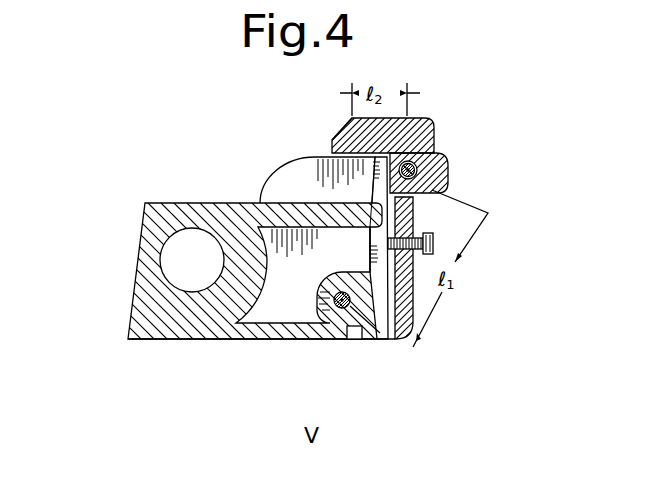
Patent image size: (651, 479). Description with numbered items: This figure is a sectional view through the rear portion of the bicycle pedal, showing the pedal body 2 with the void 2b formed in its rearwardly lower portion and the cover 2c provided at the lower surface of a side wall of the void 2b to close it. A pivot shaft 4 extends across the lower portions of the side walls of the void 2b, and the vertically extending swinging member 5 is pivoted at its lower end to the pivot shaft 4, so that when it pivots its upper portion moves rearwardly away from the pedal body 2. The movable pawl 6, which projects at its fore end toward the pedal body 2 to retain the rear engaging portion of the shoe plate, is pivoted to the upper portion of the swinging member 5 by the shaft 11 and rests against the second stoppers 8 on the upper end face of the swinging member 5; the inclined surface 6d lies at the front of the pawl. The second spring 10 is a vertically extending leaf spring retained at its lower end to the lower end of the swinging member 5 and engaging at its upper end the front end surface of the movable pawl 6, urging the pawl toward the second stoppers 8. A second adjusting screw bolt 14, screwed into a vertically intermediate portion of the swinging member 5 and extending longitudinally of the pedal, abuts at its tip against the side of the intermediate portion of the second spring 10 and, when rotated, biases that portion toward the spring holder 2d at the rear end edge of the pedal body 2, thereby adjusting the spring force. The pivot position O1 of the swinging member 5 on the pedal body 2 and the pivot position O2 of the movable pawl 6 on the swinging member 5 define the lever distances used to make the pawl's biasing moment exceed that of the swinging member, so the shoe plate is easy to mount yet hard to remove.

The pedal body 2 is at (208, 204).
The void 2b is at (252, 340).
The cover 2c is at (281, 310).
The spring holder 2d is at (387, 217).
The pivot shaft 4 is at (338, 310).
The swinging member 5 is at (408, 308).
The movable pawl 6 is at (428, 117).
The inclined surface of block 6d is at (340, 143).
The second stoppers 8 is at (410, 162).
The second spring 10 is at (385, 293).
The shaft 11 is at (447, 168).
The second adjusting screw bolt 14 is at (433, 248).
The position at which swinging member is pivoted to pedal body O1 is at (333, 306).
The position at which movable pawl is pivoted to swinging member O2 is at (413, 172).